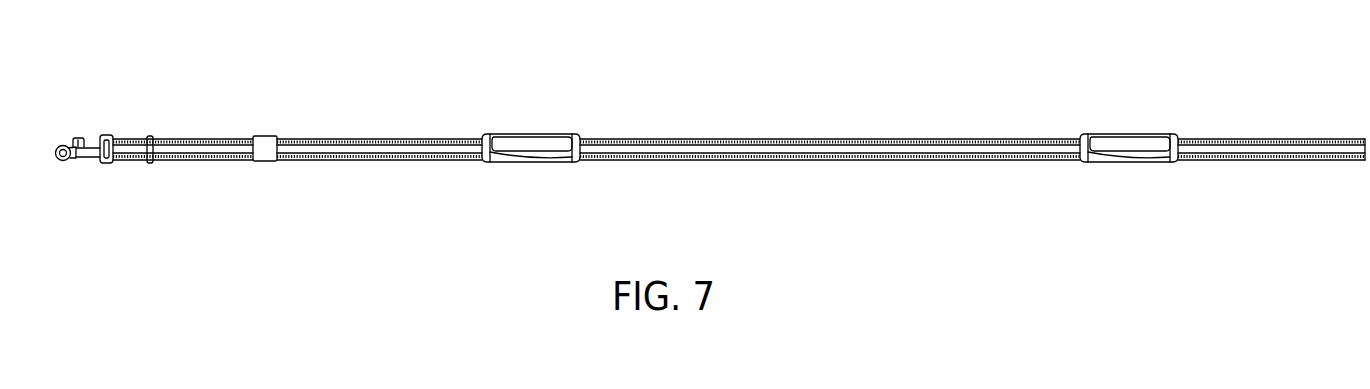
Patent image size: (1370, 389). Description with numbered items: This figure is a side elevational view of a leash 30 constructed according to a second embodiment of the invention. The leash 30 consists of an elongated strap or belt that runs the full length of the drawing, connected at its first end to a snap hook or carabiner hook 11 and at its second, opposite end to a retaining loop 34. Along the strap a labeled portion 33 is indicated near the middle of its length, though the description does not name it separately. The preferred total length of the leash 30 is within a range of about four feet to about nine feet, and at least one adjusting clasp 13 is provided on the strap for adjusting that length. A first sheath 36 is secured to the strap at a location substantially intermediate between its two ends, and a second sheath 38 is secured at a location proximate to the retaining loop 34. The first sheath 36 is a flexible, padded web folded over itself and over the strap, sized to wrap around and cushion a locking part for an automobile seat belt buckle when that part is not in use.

The snap hook 11 is at (71, 162).
The adjusting clasp 13 is at (262, 135).
The leash 30 is at (739, 186).
The top edge of strap 33 is at (787, 139).
The retaining loop 34 is at (1235, 161).
The first sheath 36 is at (541, 116).
The second sheath 38 is at (1133, 116).